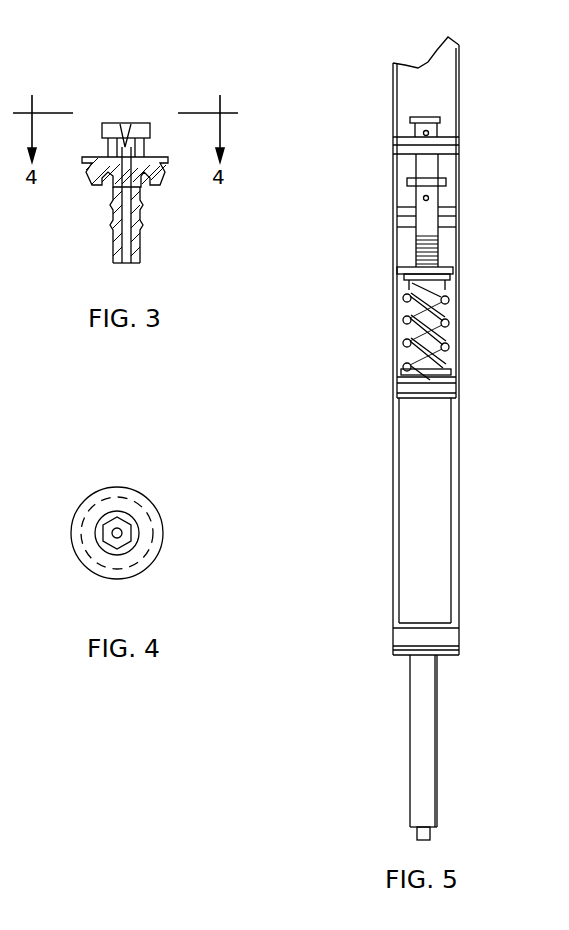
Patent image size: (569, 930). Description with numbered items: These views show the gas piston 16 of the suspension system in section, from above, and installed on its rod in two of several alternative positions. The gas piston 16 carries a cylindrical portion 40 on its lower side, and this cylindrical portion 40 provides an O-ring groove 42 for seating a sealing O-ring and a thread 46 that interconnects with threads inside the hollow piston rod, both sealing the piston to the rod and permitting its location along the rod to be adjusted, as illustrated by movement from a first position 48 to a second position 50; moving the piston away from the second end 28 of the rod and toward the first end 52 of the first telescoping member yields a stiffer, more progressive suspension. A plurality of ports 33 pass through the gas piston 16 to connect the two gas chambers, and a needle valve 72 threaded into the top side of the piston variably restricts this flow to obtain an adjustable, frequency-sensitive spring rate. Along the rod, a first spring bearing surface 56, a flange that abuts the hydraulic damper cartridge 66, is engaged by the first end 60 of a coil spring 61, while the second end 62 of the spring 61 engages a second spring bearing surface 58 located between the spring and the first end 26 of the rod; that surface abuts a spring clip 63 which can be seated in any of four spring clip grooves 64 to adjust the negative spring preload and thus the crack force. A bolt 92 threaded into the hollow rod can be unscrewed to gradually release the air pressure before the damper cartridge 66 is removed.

In FIG. 3, the gas piston 16 is at (184, 205).
In FIG. 4, the gas piston 16 is at (166, 476).
In FIG. 5, the gas piston 16 is at (397, 137).
In FIG. 5, the first end 26 is at (415, 163).
In FIG. 5, the second end 28 is at (410, 802).
In FIG. 3, the ports 33 is at (112, 157).
In FIG. 5, the ports 33 is at (429, 132).
In FIG. 3, the cylindrical portion 40 is at (139, 227).
In FIG. 3, the O-ring groove 42 is at (111, 213).
In FIG. 3, the thread 46 is at (111, 255).
In FIG. 5, the first position 48 is at (460, 150).
In FIG. 5, the second position 50 is at (460, 205).
In FIG. 5, the first end 52 is at (460, 50).
In FIG. 5, the first spring bearing surface 56 is at (456, 368).
In FIG. 5, the second spring bearing surface 58 is at (452, 270).
In FIG. 5, the first end of spring 60 is at (397, 270).
In FIG. 5, the spring 61 is at (406, 320).
In FIG. 5, the second end of spring 62 is at (400, 372).
In FIG. 5, the spring clip 63 is at (450, 281).
In FIG. 5, the spring clip grooves 64 is at (438, 243).
In FIG. 5, the hydraulic damper cartridge 66 is at (460, 506).
In FIG. 3, the needle valve 72 is at (126, 122).
In FIG. 4, the needle valve 72 is at (122, 537).
In FIG. 5, the bolt 92 is at (431, 833).